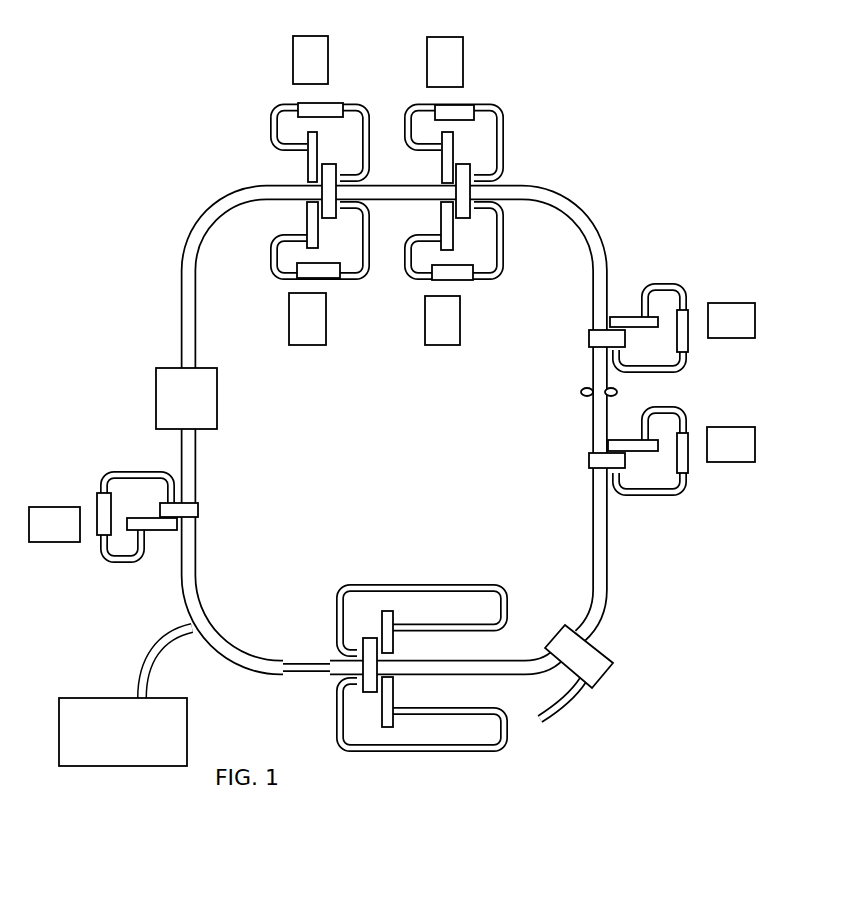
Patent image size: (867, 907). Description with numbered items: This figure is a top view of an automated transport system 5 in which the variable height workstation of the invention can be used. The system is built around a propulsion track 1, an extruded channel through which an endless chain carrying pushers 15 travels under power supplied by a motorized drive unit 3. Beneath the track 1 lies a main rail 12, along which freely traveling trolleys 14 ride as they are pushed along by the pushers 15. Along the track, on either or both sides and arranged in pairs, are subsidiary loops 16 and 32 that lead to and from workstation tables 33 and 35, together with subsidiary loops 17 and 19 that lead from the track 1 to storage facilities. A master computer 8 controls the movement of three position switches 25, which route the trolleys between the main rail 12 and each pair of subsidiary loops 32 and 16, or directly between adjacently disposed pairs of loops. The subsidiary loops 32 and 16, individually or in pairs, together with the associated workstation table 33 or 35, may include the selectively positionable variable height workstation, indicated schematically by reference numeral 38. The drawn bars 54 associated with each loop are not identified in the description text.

The propulsion track 1 is at (180, 300).
The motorized drive unit 3 is at (219, 397).
The automated transport system 5 is at (577, 165).
The master computer 8 is at (188, 718).
The main rail 12 is at (304, 674).
The trolley 14 is at (618, 392).
The pusher 15 is at (582, 389).
The subsidiary loop 16 is at (364, 100).
The subsidiary loop 17 is at (457, 577).
The subsidiary loop 19 is at (481, 762).
The three position switch 25 is at (335, 220).
The subsidiary loop 32 is at (349, 275).
The workstation table 33 is at (727, 303).
The workstation table 35 is at (316, 36).
The variable height workstation 38 is at (303, 103).
The guide bar 54 is at (318, 152).